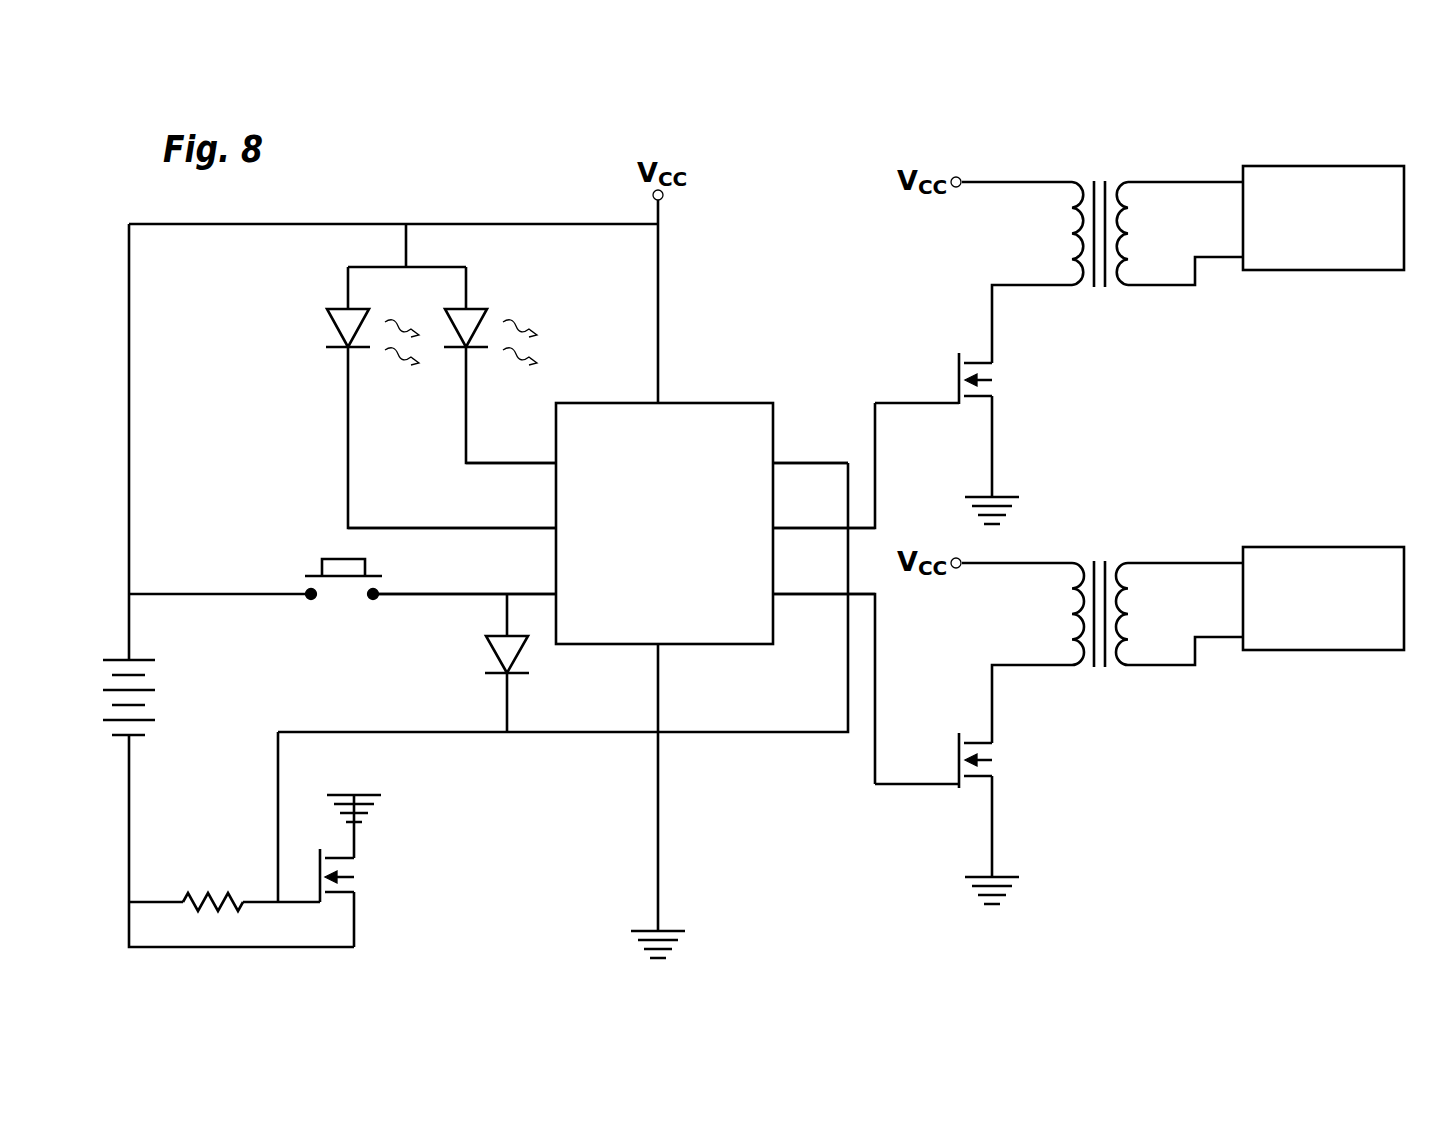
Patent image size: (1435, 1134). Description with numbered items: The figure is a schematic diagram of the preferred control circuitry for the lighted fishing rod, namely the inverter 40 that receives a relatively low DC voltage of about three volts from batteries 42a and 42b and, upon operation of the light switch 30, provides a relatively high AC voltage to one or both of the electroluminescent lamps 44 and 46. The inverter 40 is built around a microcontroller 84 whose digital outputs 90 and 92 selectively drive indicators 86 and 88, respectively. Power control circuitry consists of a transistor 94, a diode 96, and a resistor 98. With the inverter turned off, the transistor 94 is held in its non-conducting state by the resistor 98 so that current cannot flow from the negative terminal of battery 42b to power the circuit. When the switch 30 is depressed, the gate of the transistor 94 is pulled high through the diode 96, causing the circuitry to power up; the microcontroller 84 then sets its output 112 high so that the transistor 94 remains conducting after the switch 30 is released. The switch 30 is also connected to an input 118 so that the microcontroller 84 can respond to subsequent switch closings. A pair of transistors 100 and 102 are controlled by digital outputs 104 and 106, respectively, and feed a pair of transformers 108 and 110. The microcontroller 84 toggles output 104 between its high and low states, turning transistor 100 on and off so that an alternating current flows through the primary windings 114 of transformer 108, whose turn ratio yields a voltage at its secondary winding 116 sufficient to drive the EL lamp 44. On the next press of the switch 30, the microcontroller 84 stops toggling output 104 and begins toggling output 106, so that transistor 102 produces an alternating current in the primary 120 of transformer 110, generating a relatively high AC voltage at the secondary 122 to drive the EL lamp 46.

The light switch 30 is at (340, 592).
The inverter 40 is at (1002, 153).
The battery 42a is at (167, 669).
The battery 42b is at (165, 706).
The electroluminescent lamp 44 is at (1316, 164).
The electroluminescent lamp 46 is at (1318, 545).
The microcontroller 84 is at (729, 401).
The indicator 86 is at (345, 331).
The indicator 88 is at (487, 312).
The digital output 90 is at (515, 525).
The digital output 92 is at (525, 460).
The transistor 94 is at (368, 871).
The diode 96 is at (520, 658).
The resistor 98 is at (213, 896).
The transistor 100 is at (1006, 372).
The transistor 102 is at (1006, 752).
The digital output 104 is at (786, 526).
The digital output 106 is at (788, 592).
The transformer 108 is at (1100, 179).
The transformer 110 is at (1100, 560).
The output 112 is at (783, 461).
The primary windings 114 is at (1065, 224).
The secondary winding 116 is at (1136, 222).
The input 118 is at (530, 592).
The primary 120 is at (1065, 610).
The secondary 122 is at (1132, 605).